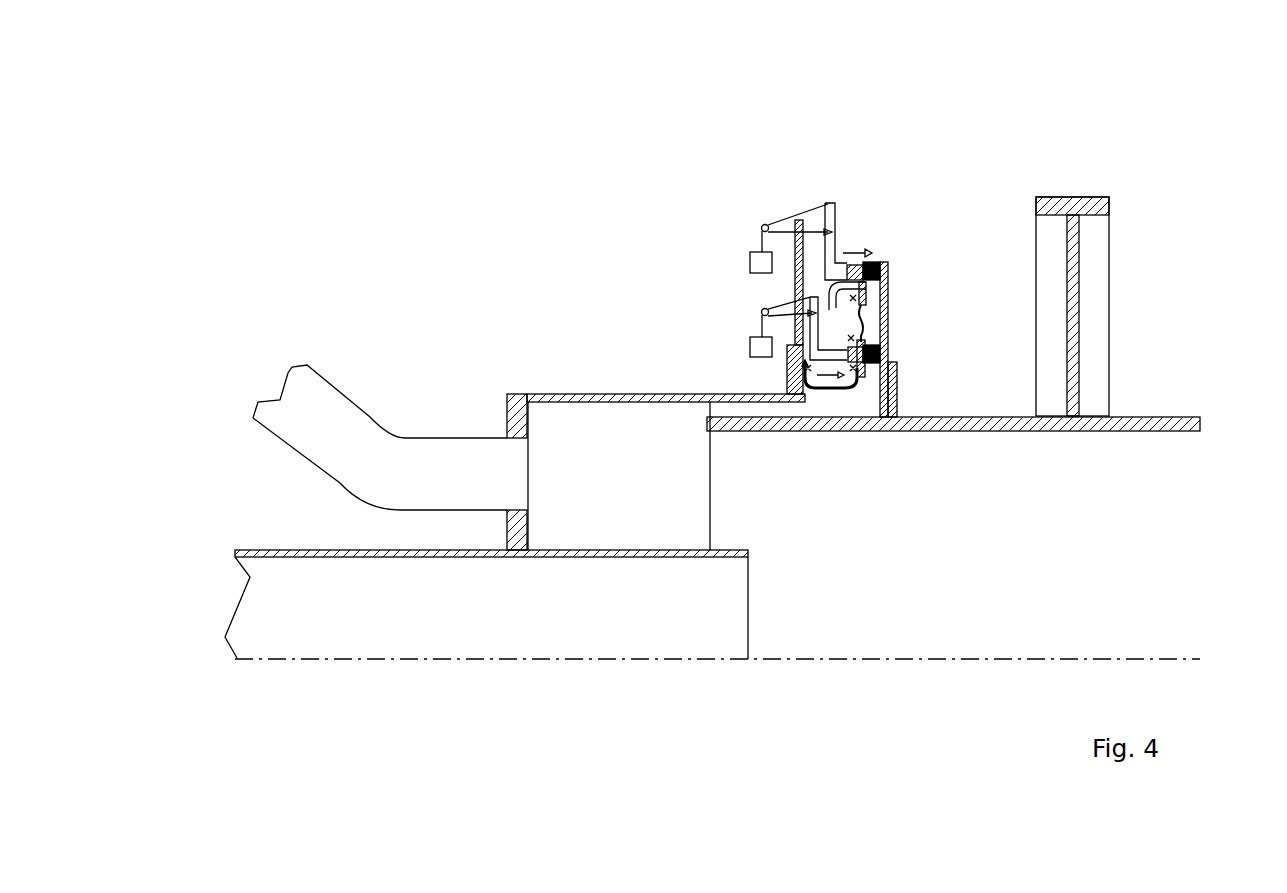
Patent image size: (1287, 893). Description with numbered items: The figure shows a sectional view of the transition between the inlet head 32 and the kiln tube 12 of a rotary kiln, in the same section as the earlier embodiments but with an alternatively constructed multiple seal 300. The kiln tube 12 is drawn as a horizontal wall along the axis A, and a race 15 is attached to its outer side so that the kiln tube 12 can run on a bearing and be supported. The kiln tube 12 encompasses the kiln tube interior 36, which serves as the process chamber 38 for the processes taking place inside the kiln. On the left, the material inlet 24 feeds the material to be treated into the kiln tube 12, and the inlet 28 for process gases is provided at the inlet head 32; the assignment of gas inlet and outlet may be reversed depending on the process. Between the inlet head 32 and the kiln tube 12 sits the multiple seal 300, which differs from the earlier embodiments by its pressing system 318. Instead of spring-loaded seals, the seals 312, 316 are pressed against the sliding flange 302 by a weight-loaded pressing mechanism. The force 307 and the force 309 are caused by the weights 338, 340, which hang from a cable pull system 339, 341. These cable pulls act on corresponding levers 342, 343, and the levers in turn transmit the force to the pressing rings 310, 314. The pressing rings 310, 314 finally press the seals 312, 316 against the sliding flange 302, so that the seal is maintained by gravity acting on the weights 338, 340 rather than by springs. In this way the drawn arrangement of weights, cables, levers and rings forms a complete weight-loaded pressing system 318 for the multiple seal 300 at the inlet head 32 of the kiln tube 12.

The kiln tube 12 is at (1188, 416).
The race 15 is at (1070, 197).
The material inlet 24 is at (268, 550).
The inlet 28 is at (335, 392).
The inlet head 32 is at (529, 210).
The kiln tube interior 36 is at (1162, 512).
The process chamber 38 is at (1032, 548).
The rotation axis A is at (867, 658).
The multiple seal 300 is at (913, 83).
The sliding flange 302 is at (864, 312).
The force 307 is at (787, 392).
The force 309 is at (853, 252).
The pressing ring 310 is at (867, 370).
The seal 312 is at (876, 343).
The pressing ring 314 is at (866, 290).
The seal 316 is at (873, 262).
The pressing system 318 is at (650, 228).
The weight 338 is at (750, 350).
The cable pull system 339 is at (754, 335).
The weight 340 is at (750, 262).
The cable pull system 341 is at (792, 220).
The lever 342 is at (811, 297).
The lever 343 is at (833, 203).